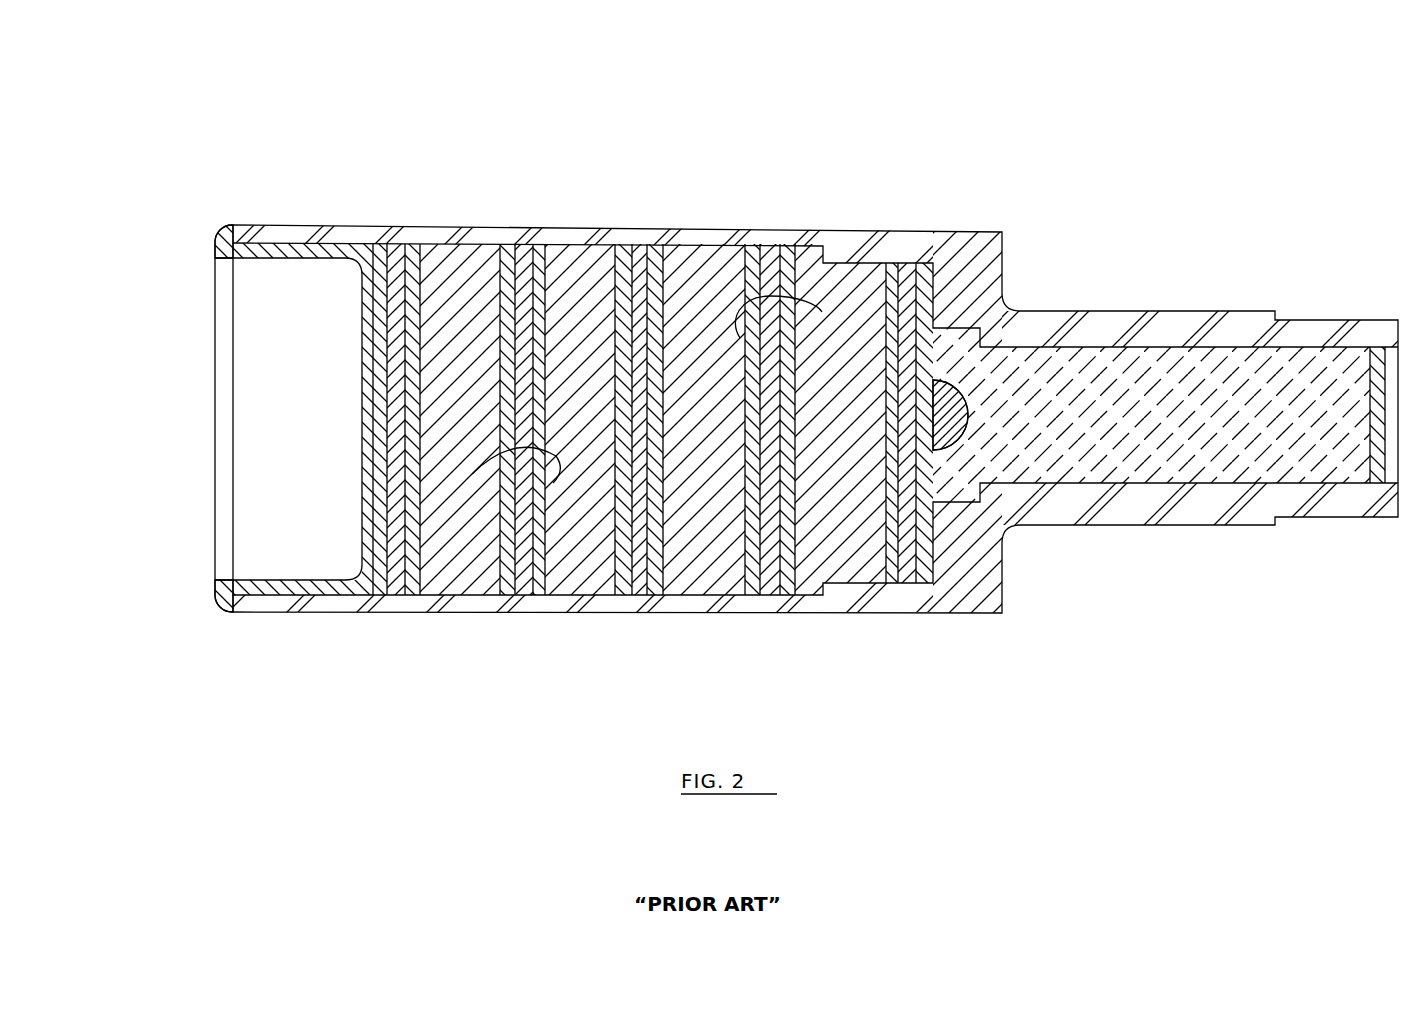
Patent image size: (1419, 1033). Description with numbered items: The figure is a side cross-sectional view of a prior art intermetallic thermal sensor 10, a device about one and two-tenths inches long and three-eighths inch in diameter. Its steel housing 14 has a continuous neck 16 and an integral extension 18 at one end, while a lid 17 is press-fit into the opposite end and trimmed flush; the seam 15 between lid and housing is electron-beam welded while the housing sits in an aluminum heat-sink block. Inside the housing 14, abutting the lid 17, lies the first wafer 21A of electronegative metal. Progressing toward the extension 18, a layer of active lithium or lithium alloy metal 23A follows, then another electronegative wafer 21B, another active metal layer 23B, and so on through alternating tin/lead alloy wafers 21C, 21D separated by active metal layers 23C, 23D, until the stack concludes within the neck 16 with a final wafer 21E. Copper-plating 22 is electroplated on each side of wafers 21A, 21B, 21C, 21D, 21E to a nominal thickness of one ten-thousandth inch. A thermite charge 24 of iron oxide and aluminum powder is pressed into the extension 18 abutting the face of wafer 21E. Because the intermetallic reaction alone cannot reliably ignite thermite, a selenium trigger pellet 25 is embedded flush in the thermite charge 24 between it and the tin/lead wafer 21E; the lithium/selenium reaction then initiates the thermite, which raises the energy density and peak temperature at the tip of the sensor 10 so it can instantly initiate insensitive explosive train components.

The intermetallic thermal sensor 10 is at (758, 361).
The housing 14 is at (680, 410).
The seam 15 is at (215, 240).
The neck 16 is at (1002, 268).
The lid 17 is at (250, 581).
The extension 18 is at (1222, 309).
The first wafer 21A is at (412, 255).
The wafer 21B is at (524, 255).
The wafer 21C is at (641, 255).
The wafer 21D is at (771, 255).
The wafer 21E is at (907, 275).
The copper-plating 22 is at (800, 322).
The active metal layer 23A is at (450, 557).
The active metal layer 23B is at (578, 572).
The active metal layer 23C is at (700, 557).
The active metal layer 23D is at (833, 553).
The thermite charge 24 is at (1130, 458).
The selenium trigger pellet 25 is at (962, 413).